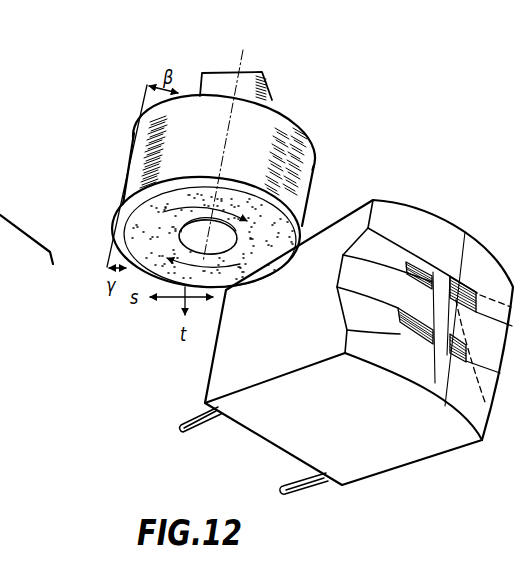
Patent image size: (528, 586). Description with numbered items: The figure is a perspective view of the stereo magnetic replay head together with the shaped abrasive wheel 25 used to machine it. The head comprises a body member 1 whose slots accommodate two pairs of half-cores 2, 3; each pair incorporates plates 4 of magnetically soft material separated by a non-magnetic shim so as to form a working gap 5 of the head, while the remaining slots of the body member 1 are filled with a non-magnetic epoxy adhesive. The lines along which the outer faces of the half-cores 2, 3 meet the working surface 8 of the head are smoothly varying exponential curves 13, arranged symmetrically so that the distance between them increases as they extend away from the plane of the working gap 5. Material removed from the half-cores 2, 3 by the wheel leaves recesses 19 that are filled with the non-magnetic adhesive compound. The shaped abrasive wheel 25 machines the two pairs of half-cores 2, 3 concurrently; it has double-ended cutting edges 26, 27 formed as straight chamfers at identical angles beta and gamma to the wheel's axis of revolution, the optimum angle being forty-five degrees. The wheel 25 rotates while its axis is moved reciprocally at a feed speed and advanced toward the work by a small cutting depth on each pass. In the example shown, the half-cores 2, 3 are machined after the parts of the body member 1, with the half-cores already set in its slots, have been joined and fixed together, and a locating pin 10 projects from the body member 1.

The body member 1 is at (290, 445).
The half-core 2 is at (433, 337).
The half-core 3 is at (441, 353).
The plates 4 is at (453, 287).
The working gap 5 is at (456, 245).
The working surface 8 is at (424, 370).
The locating pin 10 is at (194, 428).
The exponential curves 13 is at (395, 308).
The recesses 19 is at (355, 270).
The shaped abrasive wheel 25 is at (311, 167).
The cutting edge 26 is at (132, 206).
The cutting edge 27 is at (192, 100).